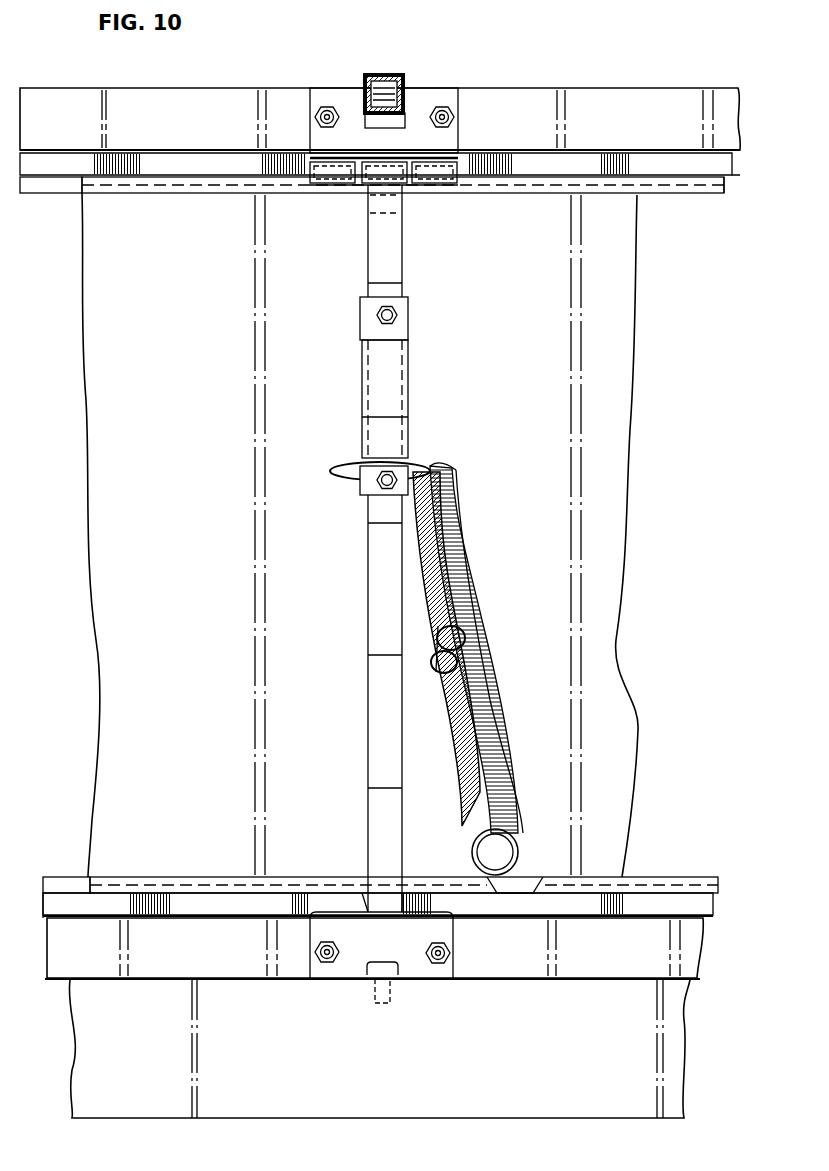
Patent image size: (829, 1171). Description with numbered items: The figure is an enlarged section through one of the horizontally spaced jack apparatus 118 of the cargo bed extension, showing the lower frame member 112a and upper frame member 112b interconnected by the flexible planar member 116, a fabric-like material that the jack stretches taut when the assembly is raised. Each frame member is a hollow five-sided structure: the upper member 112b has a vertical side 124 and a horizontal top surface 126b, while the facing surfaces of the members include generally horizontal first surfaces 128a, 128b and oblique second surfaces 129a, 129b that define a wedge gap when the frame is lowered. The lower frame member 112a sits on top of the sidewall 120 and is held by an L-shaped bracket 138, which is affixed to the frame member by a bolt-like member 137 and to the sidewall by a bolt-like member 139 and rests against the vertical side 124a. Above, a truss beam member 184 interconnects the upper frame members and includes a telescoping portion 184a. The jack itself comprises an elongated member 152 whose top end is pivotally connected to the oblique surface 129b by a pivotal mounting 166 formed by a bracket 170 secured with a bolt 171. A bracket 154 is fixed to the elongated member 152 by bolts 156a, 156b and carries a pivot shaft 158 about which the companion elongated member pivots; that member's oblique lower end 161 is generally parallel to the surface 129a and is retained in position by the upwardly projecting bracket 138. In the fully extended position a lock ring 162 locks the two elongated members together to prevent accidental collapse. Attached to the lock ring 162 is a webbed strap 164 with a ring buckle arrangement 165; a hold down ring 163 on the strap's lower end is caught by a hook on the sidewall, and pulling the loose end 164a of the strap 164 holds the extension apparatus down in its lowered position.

The lower frame member 112a is at (177, 953).
The upper frame member 112b is at (211, 164).
The flexible planar member 116 is at (175, 557).
The jack apparatus 118 is at (381, 548).
The sidewall 120 is at (84, 1038).
The vertical side 124 is at (210, 98).
The vertical side of lower frame member 124a is at (247, 964).
The top surface of upper frame member 126b is at (640, 88).
The first surface of lower frame member 128a is at (677, 878).
The first surface of upper frame member 128b is at (697, 195).
The second surface of lower frame member 129a is at (88, 912).
The second surface of upper frame member 129b is at (50, 165).
The bolt-like member 137 is at (327, 966).
The L-shaped bracket 138 is at (402, 982).
The bolt-like member 139 is at (378, 1002).
The elongated member 152 is at (378, 697).
The bracket 154 is at (410, 395).
The bolt 156a is at (377, 481).
The bolt 156b is at (374, 317).
The pivot shaft 158 is at (388, 319).
The lower end 161 is at (368, 912).
The lock ring 162 is at (412, 466).
The hold down ring 163 is at (519, 854).
The webbed strap 164 is at (508, 794).
The loose end 164a is at (468, 780).
The ring buckle arrangement 165 is at (460, 648).
The pivotal mounting 166 is at (401, 185).
The bracket 170 is at (342, 140).
The bolt 171 is at (314, 117).
The truss beam member 184 is at (368, 79).
The telescoping portion 184a is at (403, 78).